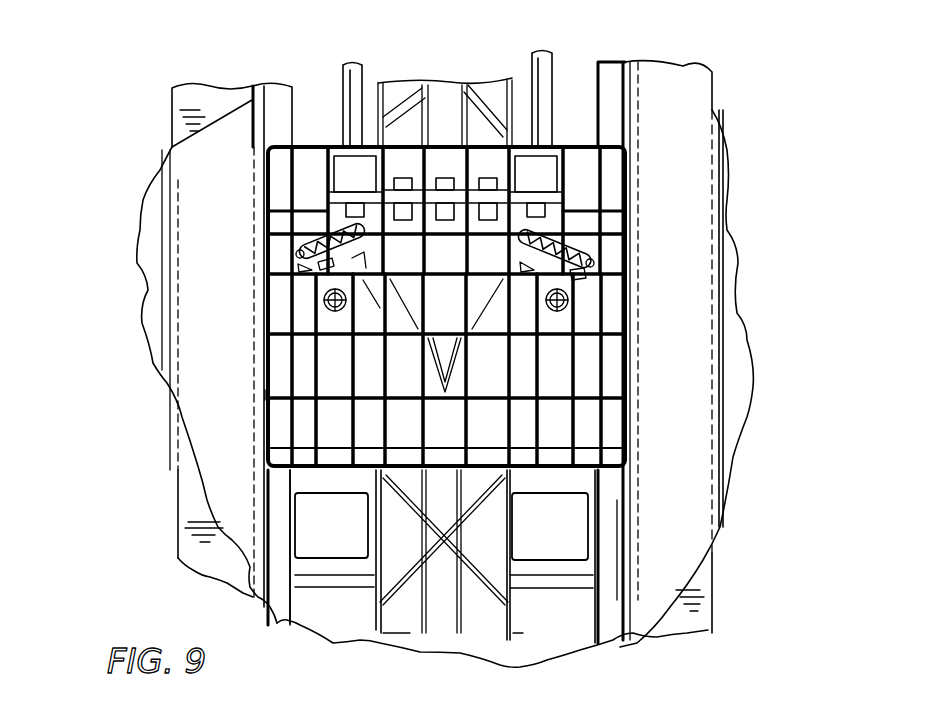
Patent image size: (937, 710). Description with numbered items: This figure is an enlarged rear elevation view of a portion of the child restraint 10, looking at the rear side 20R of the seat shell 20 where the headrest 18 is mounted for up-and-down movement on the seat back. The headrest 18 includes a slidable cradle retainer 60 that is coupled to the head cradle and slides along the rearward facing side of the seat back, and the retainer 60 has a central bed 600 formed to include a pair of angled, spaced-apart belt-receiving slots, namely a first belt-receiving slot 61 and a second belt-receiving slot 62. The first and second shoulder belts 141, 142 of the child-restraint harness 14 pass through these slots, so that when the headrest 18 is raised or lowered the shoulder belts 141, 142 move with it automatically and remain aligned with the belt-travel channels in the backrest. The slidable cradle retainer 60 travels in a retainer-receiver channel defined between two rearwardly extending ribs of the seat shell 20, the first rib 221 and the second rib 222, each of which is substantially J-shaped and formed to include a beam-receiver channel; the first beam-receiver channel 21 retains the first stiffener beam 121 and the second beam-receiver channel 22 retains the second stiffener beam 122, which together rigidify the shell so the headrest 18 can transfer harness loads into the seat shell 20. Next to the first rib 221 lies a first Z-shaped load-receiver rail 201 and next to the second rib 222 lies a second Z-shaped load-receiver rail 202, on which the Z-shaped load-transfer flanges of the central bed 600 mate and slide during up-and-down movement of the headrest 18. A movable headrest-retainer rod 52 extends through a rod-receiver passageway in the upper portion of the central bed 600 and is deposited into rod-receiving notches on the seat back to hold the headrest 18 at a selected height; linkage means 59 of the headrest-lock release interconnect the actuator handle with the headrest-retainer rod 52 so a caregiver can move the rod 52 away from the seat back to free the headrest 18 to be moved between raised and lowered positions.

The child restraint 10 is at (207, 198).
The child-restraint harness 14 is at (340, 264).
The headrest 18 is at (582, 140).
The seat shell 20 is at (564, 633).
The rear side of seat shell 20R is at (380, 624).
The first beam-receiver channel 21 is at (673, 518).
The second beam-receiver channel 22 is at (218, 446).
The headrest-retainer rod 52 is at (434, 190).
The linkage means 59 is at (533, 52).
The slidable cradle retainer 60 is at (262, 394).
The first belt-receiving slot 61 is at (545, 248).
The second belt-receiving slot 62 is at (322, 243).
The first stiffener beam 121 is at (720, 62).
The second stiffener beam 122 is at (188, 86).
The first shoulder belt 141 is at (592, 254).
The second shoulder belt 142 is at (297, 254).
The first load-receiver rail 201 is at (613, 78).
The second load-receiver rail 202 is at (273, 82).
The first rib 221 is at (693, 302).
The second rib 222 is at (200, 274).
The central bed 600 is at (548, 416).